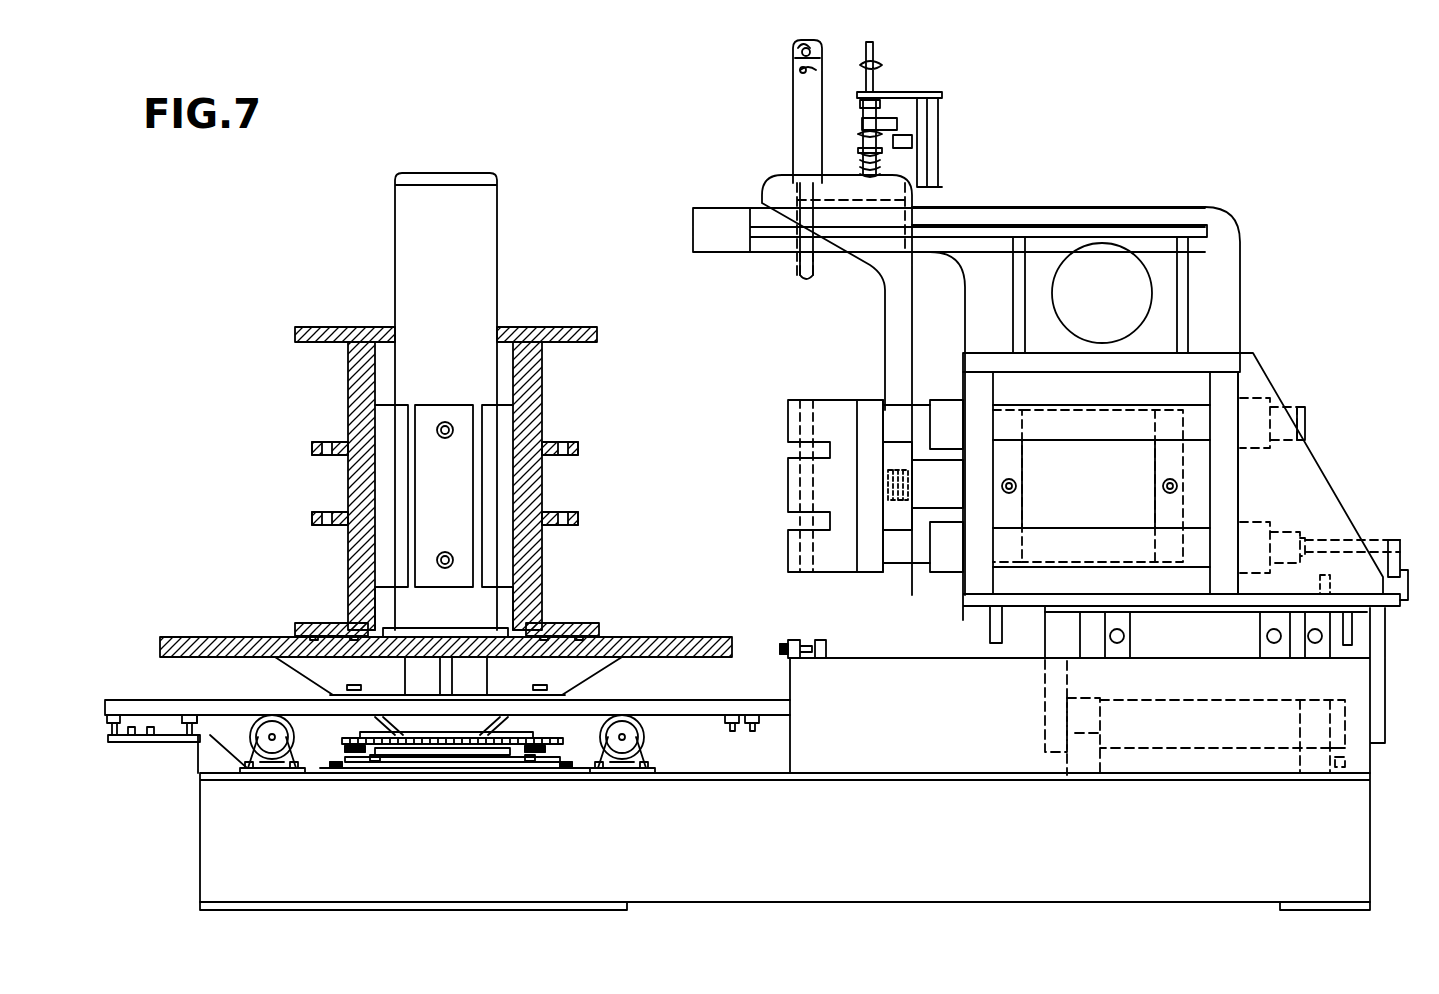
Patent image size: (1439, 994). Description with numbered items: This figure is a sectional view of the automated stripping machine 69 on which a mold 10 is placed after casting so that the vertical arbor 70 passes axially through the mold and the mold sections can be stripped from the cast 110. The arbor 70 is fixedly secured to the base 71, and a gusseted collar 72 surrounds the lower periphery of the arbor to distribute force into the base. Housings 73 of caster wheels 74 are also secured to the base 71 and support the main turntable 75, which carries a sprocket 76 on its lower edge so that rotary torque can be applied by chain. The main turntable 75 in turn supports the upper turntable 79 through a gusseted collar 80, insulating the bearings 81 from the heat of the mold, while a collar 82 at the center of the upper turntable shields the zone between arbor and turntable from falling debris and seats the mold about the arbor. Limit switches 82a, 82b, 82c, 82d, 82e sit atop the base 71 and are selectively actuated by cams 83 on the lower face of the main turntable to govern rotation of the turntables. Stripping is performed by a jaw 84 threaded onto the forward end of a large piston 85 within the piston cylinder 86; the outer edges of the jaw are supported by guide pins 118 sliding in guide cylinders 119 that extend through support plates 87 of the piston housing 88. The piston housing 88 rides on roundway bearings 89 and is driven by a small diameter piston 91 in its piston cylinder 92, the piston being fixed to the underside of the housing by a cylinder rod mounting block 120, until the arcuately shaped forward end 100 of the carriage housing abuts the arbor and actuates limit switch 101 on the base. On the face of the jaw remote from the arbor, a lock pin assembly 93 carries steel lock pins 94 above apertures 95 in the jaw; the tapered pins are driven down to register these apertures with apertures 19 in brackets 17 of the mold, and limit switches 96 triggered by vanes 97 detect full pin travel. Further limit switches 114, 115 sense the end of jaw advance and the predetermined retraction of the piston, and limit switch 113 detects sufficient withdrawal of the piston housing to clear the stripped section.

The mold 10 is at (321, 370).
The brackets 17 is at (577, 465).
The apertures 19 is at (562, 442).
The stripping machine 69 is at (588, 164).
The vertical arbor 70 is at (463, 184).
The base 71 is at (664, 855).
The gusseted collar 72 is at (420, 770).
The housings 73 is at (277, 770).
The caster wheels 74 is at (264, 742).
The main turntable 75 is at (690, 706).
The sprocket 76 is at (560, 739).
The upper turntable 79 is at (733, 638).
The gusseted collar 80 is at (574, 662).
The bearings 81 is at (349, 748).
The collar 82 is at (444, 630).
The limit switch 82a is at (112, 735).
The limit switch 82b is at (132, 743).
The limit switch 82c is at (151, 735).
The limit switch 82d is at (182, 714).
The limit switch 82e is at (197, 743).
The cams 83 is at (118, 715).
The jaw 84 is at (844, 400).
The large piston 85 is at (949, 496).
The piston cylinder 86 is at (1102, 409).
The support plates 87 is at (990, 474).
The piston housing 88 is at (1290, 366).
The roundway bearings 89 is at (1122, 642).
The small diameter piston 91 is at (1072, 706).
The piston cylinder 92 is at (1200, 704).
The lock pin assembly 93 is at (883, 297).
The lock pins 94 is at (797, 273).
The apertures 95 is at (804, 399).
The limit switches 96 is at (901, 144).
The vanes 97 is at (880, 120).
The arcuately shaped forward end 100 is at (726, 205).
The limit switch 101 is at (830, 648).
The cast 110 is at (366, 344).
The limit switch 113 is at (1358, 642).
The limit switch 114 is at (1328, 586).
The limit switch 115 is at (1404, 604).
The guide pins 118 is at (910, 570).
The guide cylinders 119 is at (952, 401).
The cylinder rod mounting block 120 is at (1045, 698).